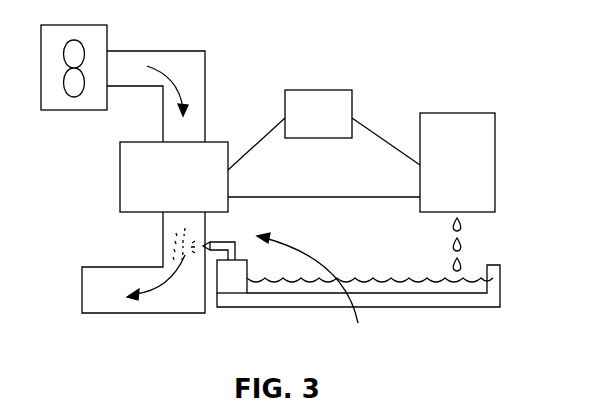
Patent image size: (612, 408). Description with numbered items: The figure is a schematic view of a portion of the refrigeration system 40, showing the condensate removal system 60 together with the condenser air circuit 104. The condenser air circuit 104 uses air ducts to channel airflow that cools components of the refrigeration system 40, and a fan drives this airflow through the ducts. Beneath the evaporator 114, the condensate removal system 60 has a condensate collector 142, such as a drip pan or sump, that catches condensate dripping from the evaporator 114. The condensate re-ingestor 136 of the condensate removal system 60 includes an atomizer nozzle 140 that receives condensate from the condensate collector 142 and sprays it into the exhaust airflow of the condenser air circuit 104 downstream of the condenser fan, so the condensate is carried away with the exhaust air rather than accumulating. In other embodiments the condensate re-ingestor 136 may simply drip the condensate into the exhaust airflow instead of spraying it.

The refrigeration system 40 is at (309, 190).
The condenser air circuit 104 is at (233, 46).
The evaporator 114 is at (495, 183).
The condensate re-ingestor 136 is at (248, 272).
The atomizer nozzle 140 is at (319, 291).
The condensate collector 142 is at (422, 307).
The condensate removal system 60 is at (359, 299).